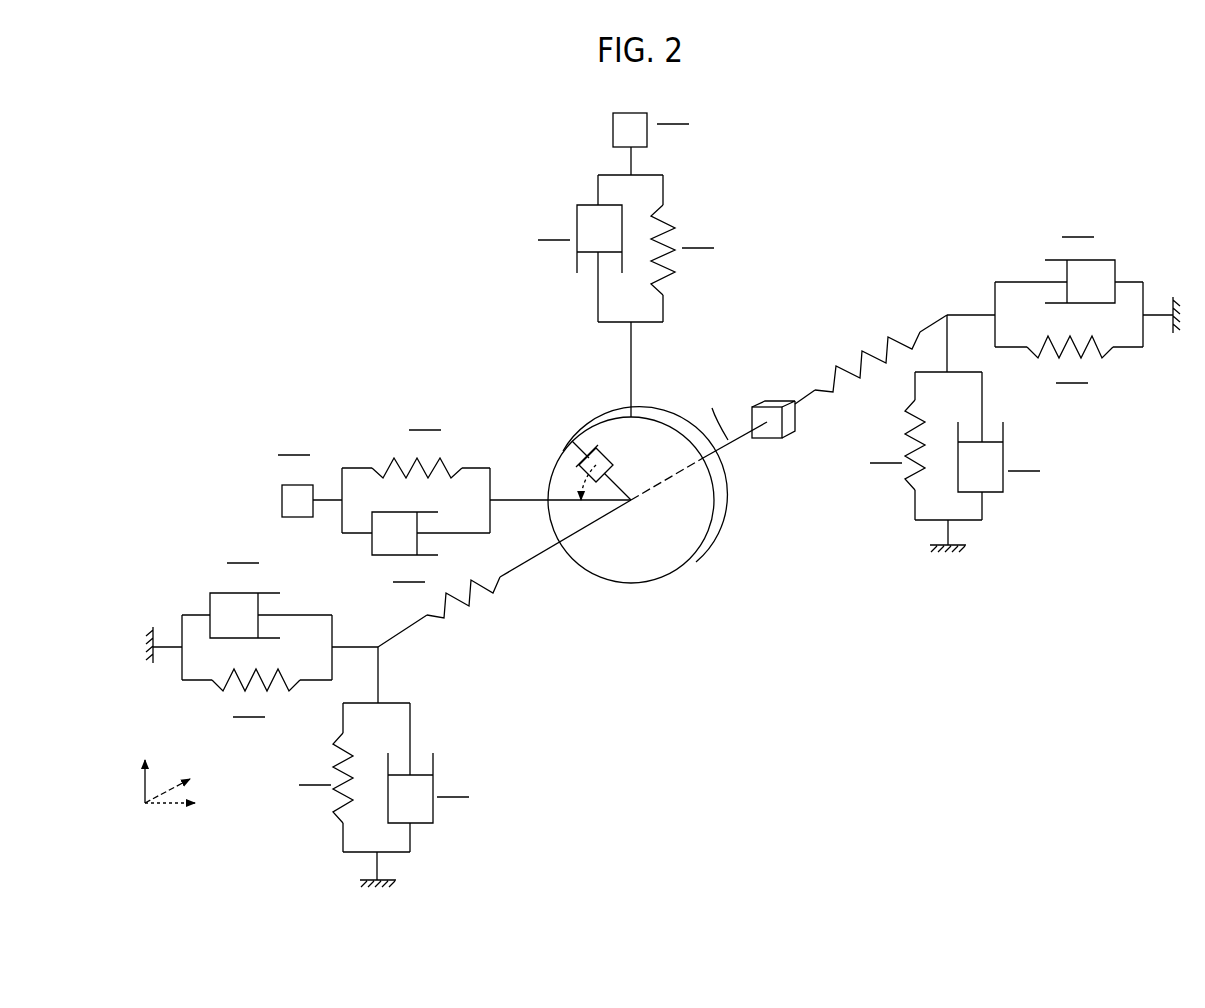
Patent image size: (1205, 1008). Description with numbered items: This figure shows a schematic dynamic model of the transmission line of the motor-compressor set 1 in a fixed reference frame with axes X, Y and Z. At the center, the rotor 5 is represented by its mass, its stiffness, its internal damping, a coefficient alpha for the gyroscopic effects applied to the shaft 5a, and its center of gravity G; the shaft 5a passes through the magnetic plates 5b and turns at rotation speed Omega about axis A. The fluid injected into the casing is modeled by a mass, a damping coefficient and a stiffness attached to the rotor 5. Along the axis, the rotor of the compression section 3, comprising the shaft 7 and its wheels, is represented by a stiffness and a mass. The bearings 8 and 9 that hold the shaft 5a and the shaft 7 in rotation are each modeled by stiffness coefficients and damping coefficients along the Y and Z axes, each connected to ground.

The motor-compressor set 1 is at (1014, 140).
The compression section 3 is at (990, 555).
The rotor 5 is at (707, 640).
The shaft 5a is at (520, 567).
The magnetic plates 5b is at (692, 565).
The shaft 7 is at (777, 440).
The bearing 8 is at (478, 830).
The bearing 9 is at (1140, 218).